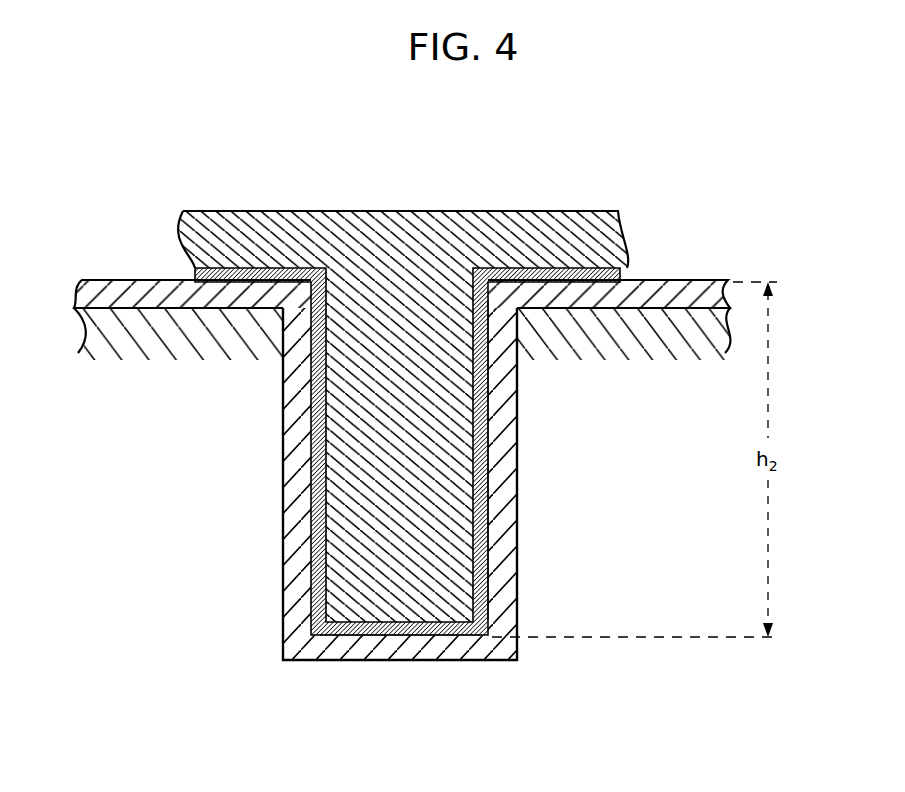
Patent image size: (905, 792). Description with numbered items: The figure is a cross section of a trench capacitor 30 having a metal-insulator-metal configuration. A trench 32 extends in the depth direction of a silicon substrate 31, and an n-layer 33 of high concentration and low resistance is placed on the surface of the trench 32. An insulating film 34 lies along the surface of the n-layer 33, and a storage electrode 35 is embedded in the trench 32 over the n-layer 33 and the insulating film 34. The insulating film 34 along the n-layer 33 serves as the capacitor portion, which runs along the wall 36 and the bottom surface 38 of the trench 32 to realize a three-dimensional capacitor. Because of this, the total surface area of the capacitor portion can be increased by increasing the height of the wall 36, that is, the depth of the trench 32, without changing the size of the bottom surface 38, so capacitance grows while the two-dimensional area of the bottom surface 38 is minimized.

The trench capacitor 30 is at (640, 178).
The silicon substrate 31 is at (693, 333).
The trench 32 is at (283, 440).
The n-layer 33 is at (512, 447).
The insulating film 34 is at (488, 547).
The storage electrode 35 is at (399, 218).
The wall 36 is at (497, 594).
The bottom surface 38 is at (466, 646).